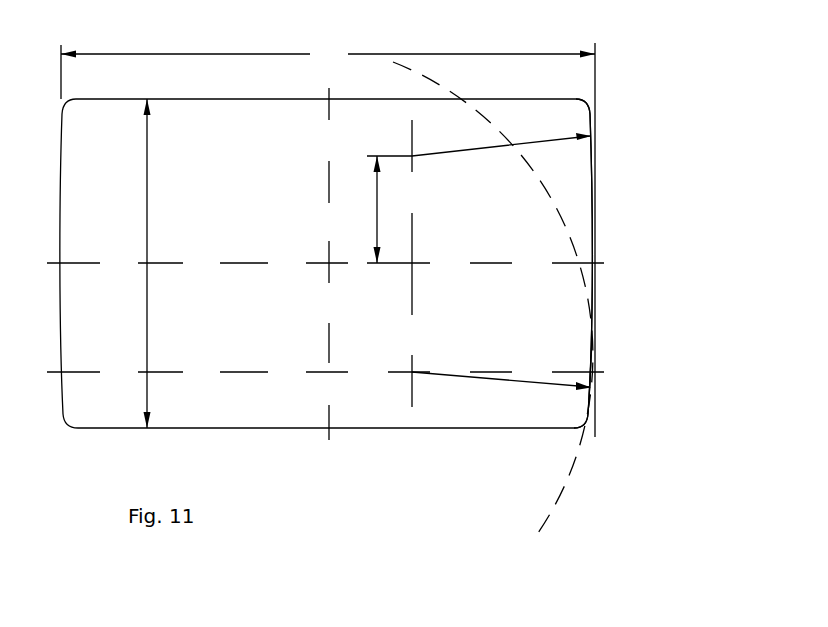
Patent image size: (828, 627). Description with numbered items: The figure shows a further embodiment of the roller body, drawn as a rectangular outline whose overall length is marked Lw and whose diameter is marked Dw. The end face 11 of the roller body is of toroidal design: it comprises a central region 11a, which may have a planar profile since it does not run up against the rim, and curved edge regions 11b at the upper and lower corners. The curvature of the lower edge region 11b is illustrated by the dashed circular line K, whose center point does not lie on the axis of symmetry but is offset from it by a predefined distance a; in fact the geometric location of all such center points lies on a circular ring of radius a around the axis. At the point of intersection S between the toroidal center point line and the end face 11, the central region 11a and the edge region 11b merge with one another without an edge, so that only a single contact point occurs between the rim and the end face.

The end face 11 is at (600, 291).
The central region 11a is at (593, 238).
The edge region 11b is at (592, 122).
The point of intersection S is at (592, 368).
The circular line K is at (558, 208).
The roller length Lw is at (328, 235).
The roller diameter Dw is at (165, 263).
The distance a is at (385, 209).